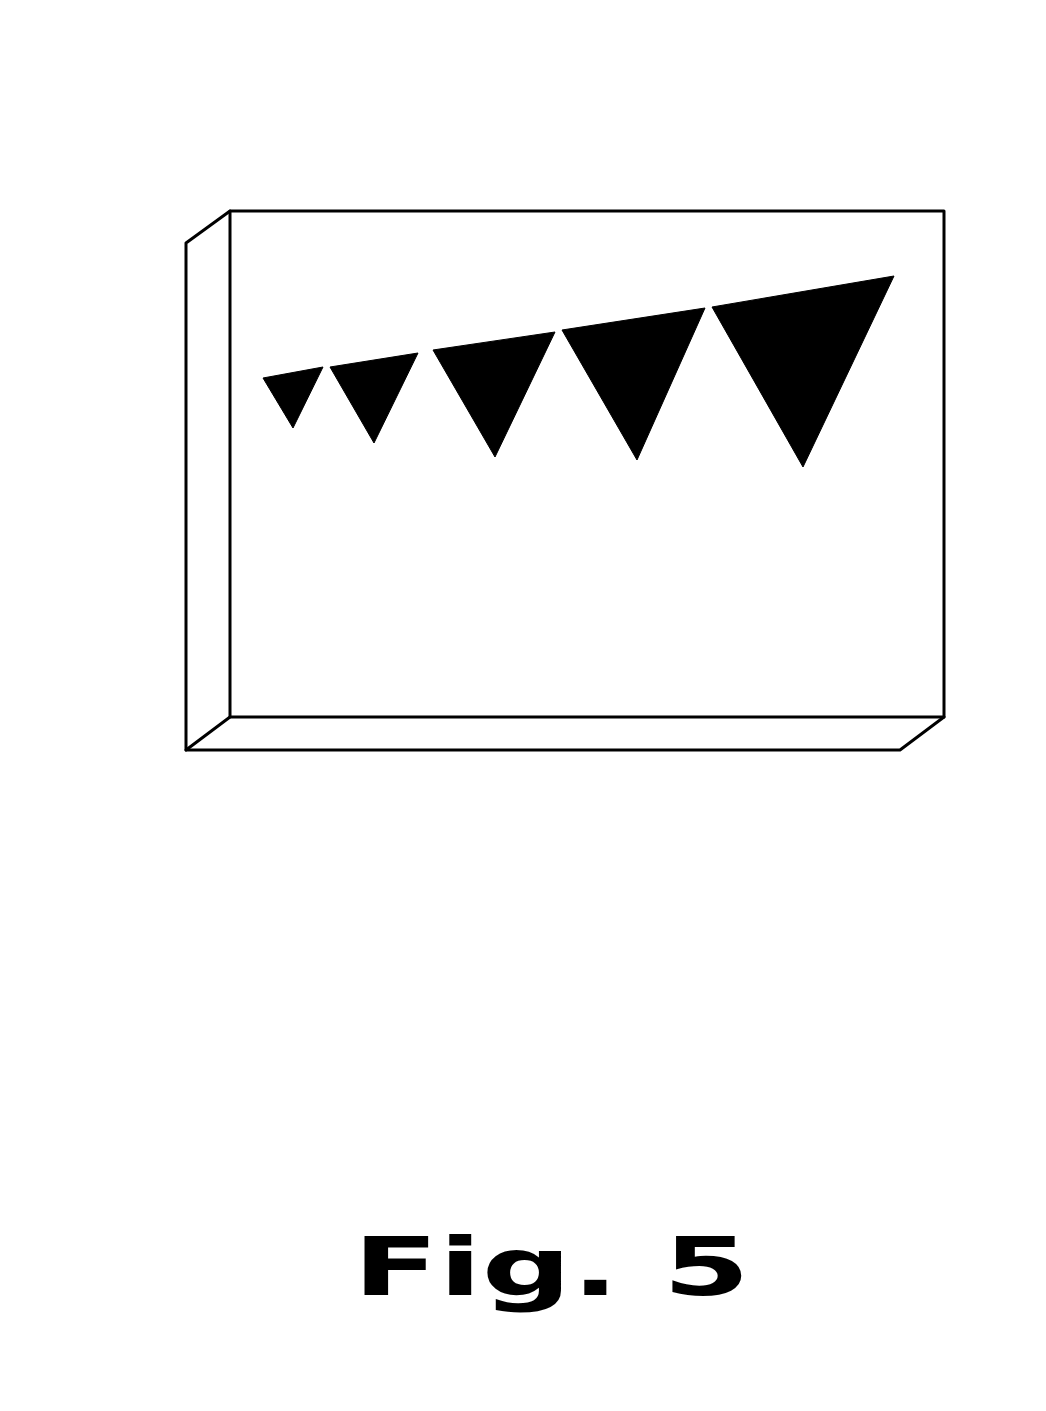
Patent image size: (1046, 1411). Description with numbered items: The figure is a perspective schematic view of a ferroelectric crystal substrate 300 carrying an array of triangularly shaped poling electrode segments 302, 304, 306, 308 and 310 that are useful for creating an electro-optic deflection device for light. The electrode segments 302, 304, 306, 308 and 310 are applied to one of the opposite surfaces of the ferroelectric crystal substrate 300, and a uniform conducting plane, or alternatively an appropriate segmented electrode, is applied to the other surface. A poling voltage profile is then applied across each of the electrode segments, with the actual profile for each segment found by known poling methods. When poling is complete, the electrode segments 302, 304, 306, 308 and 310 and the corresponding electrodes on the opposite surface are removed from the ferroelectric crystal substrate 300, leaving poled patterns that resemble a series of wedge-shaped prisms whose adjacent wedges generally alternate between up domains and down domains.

The ferroelectric crystal substrate 300 is at (207, 248).
The triangularly shaped poling electrode segment 302 is at (296, 375).
The triangularly shaped poling electrode segment 304 is at (385, 357).
The triangularly shaped poling electrode segment 306 is at (503, 340).
The triangularly shaped poling electrode segment 308 is at (629, 317).
The triangularly shaped poling electrode segment 310 is at (783, 295).